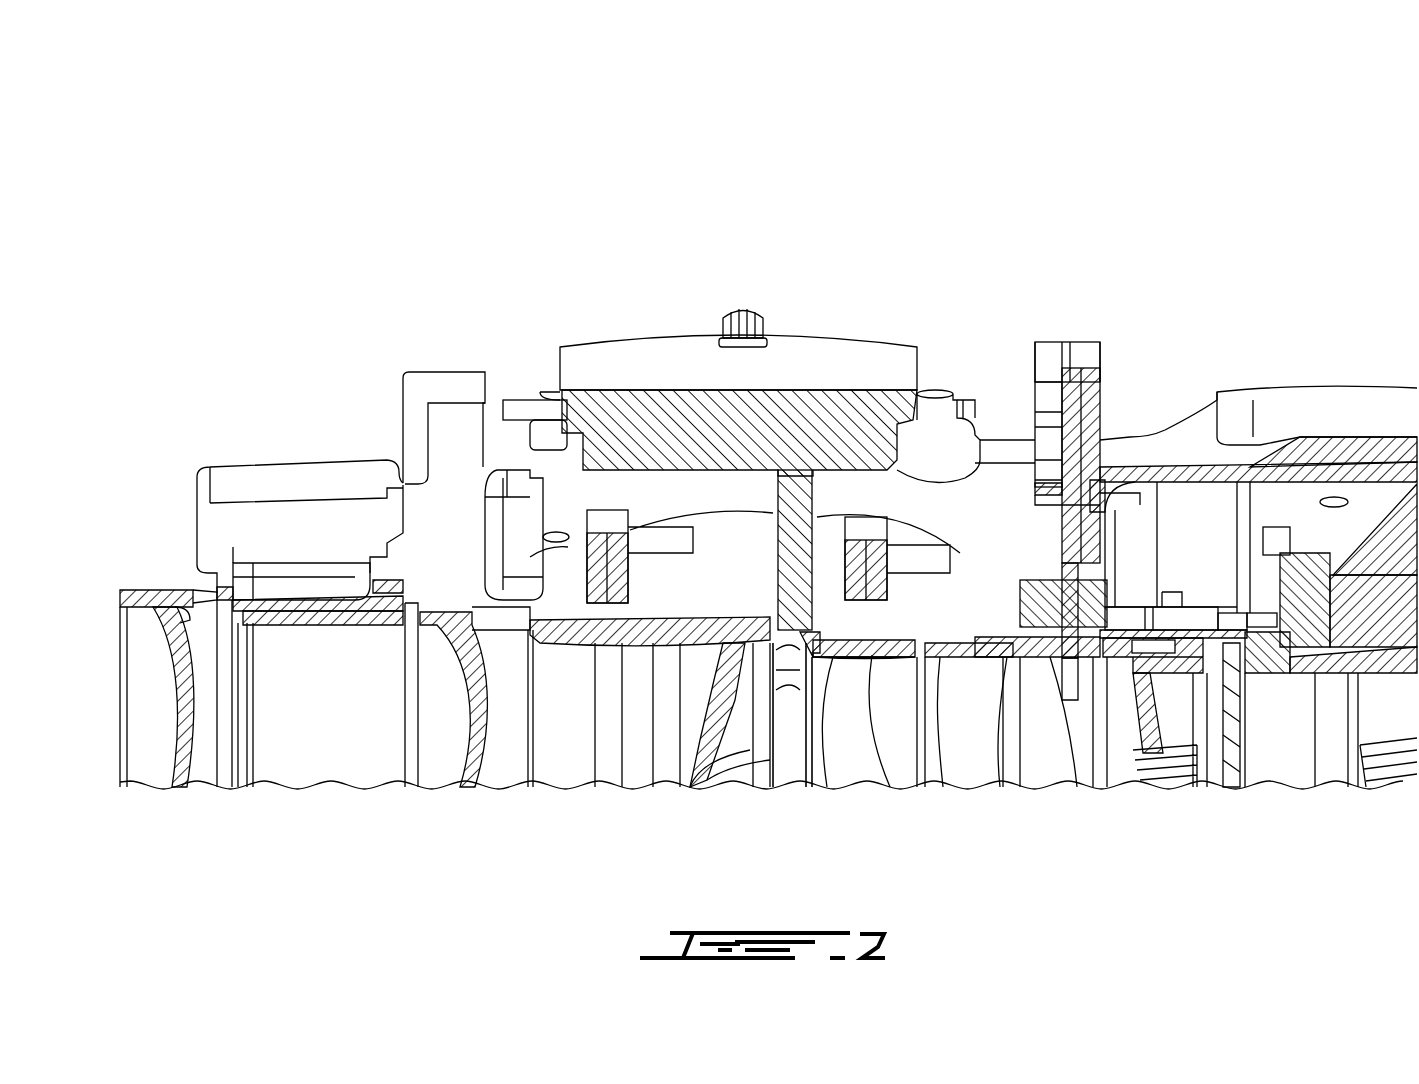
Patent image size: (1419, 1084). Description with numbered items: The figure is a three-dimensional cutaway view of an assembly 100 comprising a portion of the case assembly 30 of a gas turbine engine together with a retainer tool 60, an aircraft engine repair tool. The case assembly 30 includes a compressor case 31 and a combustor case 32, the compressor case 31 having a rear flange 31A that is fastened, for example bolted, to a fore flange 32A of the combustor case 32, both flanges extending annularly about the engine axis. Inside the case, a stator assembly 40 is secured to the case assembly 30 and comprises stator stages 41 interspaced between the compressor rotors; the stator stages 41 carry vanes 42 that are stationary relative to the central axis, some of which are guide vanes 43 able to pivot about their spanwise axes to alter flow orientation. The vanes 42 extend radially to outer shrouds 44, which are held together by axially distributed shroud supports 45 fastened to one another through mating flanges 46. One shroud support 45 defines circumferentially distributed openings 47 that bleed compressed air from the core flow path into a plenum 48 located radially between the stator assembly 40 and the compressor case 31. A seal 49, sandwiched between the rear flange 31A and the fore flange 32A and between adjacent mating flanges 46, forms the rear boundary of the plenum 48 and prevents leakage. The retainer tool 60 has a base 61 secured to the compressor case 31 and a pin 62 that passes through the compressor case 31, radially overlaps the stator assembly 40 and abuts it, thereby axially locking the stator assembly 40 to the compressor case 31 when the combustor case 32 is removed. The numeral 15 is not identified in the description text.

The assembly 100 is at (697, 136).
The case assembly 30 is at (890, 172).
The retainer tool 60 is at (655, 332).
The base 61 is at (790, 425).
The plenum 48 is at (737, 494).
The shroud supports 45 is at (718, 592).
The mating flanges 46 is at (640, 590).
The seal 49 is at (1068, 340).
The compressor case 31 is at (998, 467).
The rear flange 31A is at (1027, 335).
The combustor case 32 is at (1163, 447).
The fore flange 32A is at (1103, 336).
The stator assembly 40 is at (517, 856).
The stator stages 41 is at (443, 802).
The vanes 42 is at (612, 790).
The guide vanes 43 is at (165, 790).
The outer shrouds 44 is at (1052, 662).
The openings 47 is at (812, 668).
The pin 62 is at (850, 657).
The shaft 15 is at (1376, 795).